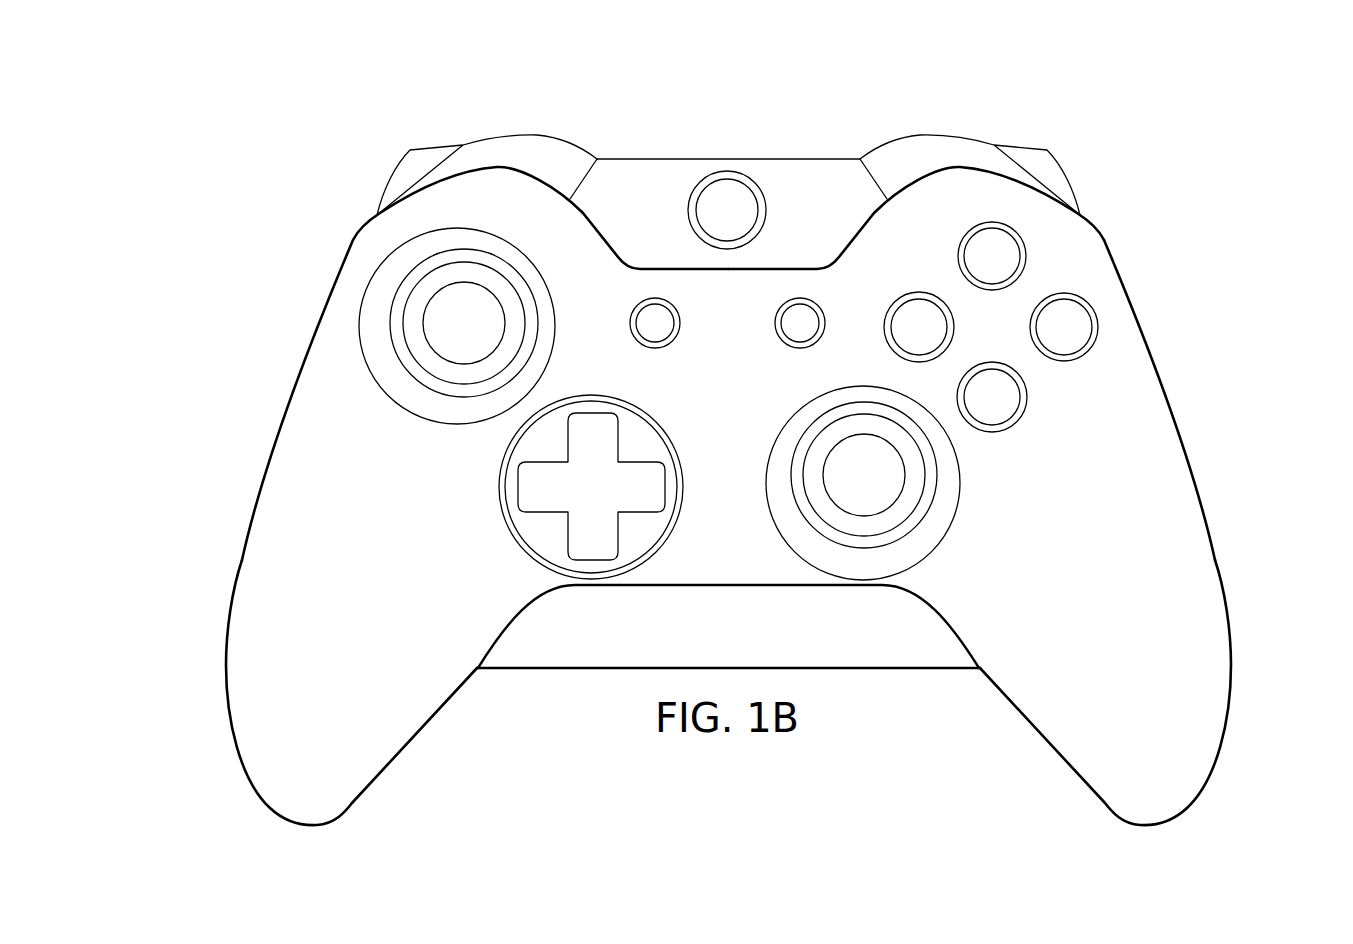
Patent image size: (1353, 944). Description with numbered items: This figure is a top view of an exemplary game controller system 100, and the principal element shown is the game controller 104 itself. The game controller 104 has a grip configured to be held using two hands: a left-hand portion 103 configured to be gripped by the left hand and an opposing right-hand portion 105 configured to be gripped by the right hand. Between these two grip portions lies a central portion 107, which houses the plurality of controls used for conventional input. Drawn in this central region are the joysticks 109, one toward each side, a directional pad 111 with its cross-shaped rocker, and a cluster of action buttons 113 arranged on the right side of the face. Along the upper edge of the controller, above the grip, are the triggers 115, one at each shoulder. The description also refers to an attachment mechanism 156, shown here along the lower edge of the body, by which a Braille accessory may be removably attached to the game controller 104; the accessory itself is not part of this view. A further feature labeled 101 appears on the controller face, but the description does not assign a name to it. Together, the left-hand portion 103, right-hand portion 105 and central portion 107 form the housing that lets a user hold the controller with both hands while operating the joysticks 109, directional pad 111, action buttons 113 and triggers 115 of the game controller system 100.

The game controller system 100 is at (338, 130).
The controller housing 101 is at (772, 297).
The left-hand portion 103 is at (268, 685).
The game controller 104 is at (1155, 326).
The right-hand portion 105 is at (1190, 685).
The central portion 107 is at (708, 552).
The joysticks 109 is at (528, 322).
The directional pad 111 is at (535, 513).
The action buttons 113 is at (917, 293).
The triggers 115 is at (435, 143).
The attachment mechanism 156 is at (872, 672).